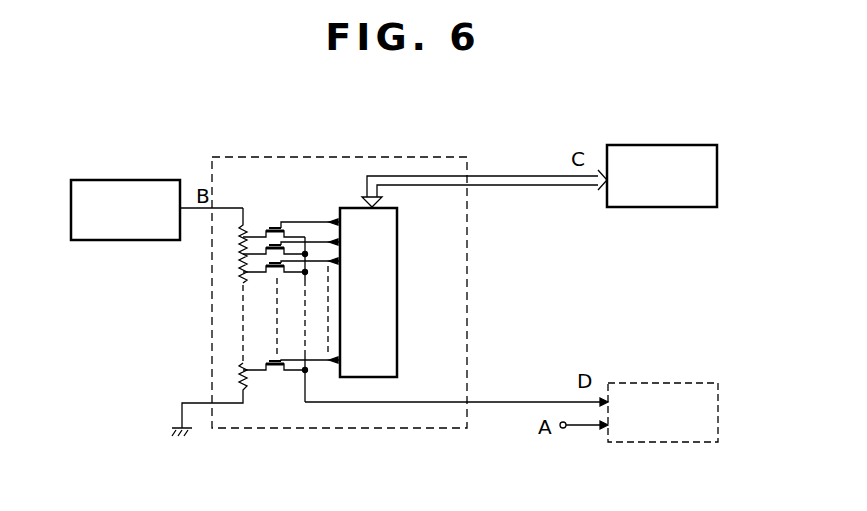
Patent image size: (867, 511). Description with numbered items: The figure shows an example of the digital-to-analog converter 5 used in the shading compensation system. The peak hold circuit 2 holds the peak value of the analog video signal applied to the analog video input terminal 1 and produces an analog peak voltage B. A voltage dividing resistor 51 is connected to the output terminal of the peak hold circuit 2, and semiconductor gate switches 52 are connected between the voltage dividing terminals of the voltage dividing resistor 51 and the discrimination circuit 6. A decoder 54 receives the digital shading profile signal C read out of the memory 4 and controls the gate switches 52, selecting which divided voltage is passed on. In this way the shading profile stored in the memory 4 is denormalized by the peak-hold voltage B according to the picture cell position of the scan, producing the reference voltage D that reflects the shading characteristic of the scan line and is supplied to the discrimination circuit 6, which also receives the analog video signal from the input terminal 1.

The analog video input terminal 1 is at (565, 428).
The peak hold circuit 2 is at (139, 180).
The memory 4 is at (657, 145).
The digital-to-analog converter 5 is at (429, 157).
The discrimination circuit 6 is at (653, 383).
The voltage dividing resistor 51 is at (243, 262).
The semiconductor gate switches 52 is at (267, 228).
The decoder 54 is at (399, 279).